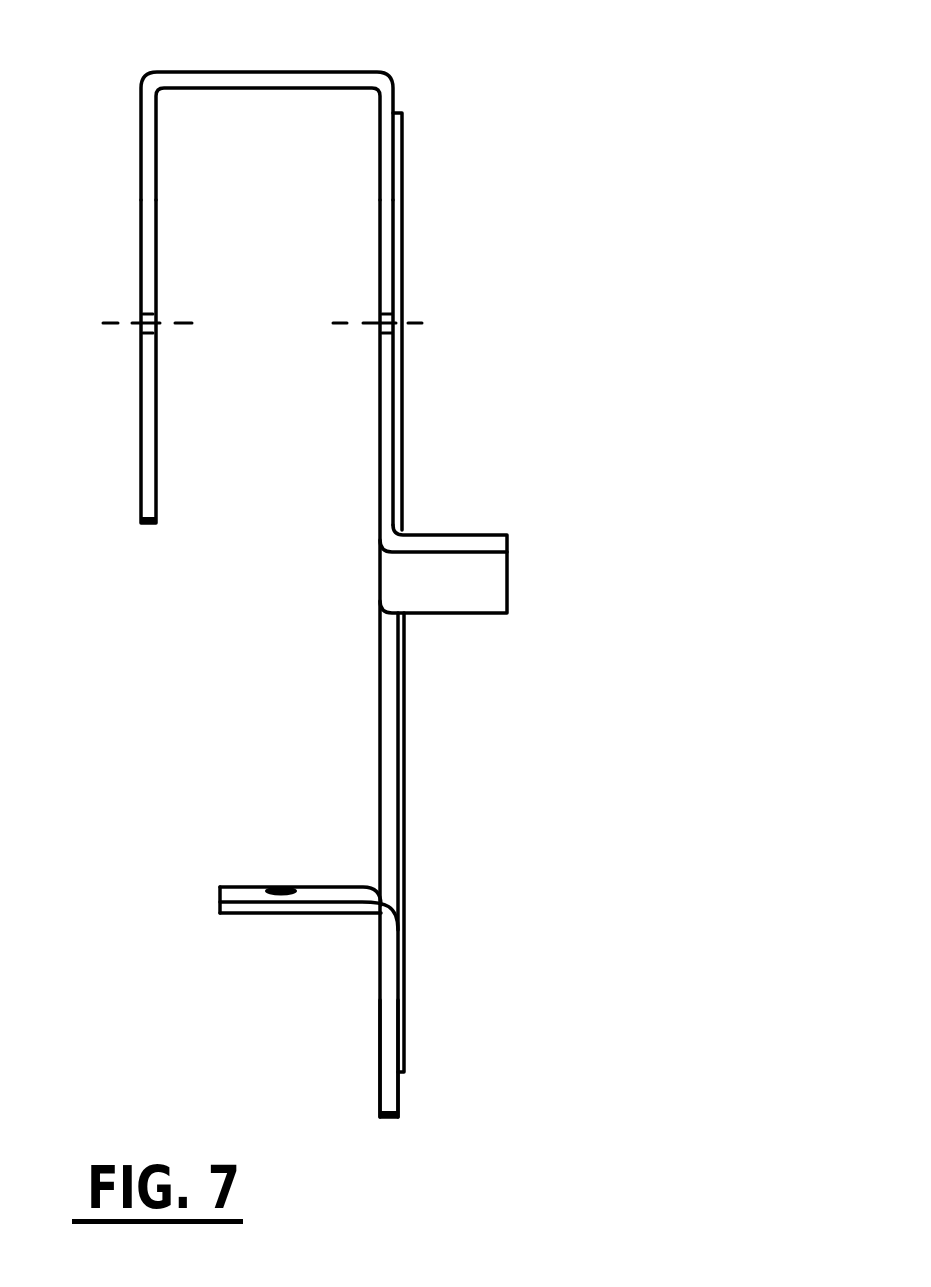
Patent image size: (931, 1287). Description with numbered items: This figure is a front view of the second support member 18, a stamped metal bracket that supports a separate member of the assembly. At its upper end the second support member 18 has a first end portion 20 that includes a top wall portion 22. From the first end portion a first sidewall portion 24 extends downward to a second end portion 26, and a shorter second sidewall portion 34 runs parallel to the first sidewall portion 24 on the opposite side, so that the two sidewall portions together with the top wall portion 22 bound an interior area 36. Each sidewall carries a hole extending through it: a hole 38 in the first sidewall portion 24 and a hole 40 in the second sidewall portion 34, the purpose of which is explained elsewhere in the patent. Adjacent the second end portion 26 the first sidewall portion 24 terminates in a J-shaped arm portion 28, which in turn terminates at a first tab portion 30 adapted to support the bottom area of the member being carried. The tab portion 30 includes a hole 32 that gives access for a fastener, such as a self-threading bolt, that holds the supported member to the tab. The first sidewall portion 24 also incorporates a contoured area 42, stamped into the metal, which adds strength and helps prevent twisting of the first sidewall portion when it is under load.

The second support member 18 is at (301, 558).
The first end portion 20 is at (462, 70).
The top wall portion 22 is at (243, 72).
The first sidewall portion 24 is at (397, 407).
The second end portion 26 is at (517, 1038).
The J-shaped arm portion 28 is at (381, 1035).
The first tab portion 30 is at (254, 883).
The hole 32 is at (278, 886).
The second sidewall portion 34 is at (157, 405).
The interior area 36 is at (292, 204).
The hole 38 is at (397, 300).
The hole 40 is at (147, 310).
The contoured area 42 is at (397, 213).